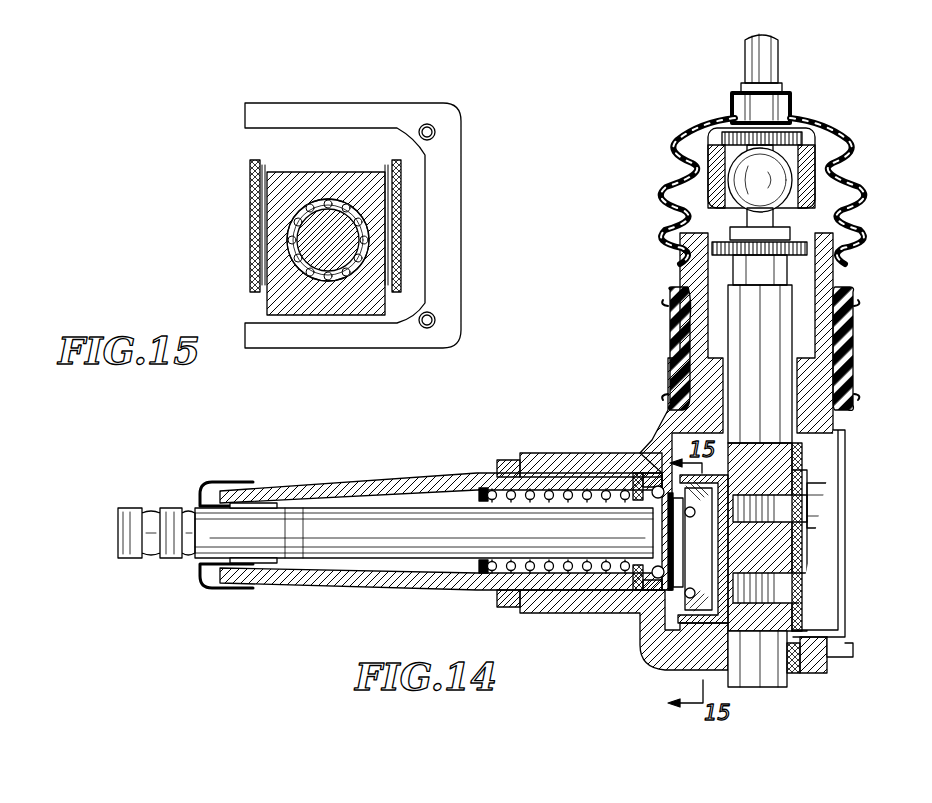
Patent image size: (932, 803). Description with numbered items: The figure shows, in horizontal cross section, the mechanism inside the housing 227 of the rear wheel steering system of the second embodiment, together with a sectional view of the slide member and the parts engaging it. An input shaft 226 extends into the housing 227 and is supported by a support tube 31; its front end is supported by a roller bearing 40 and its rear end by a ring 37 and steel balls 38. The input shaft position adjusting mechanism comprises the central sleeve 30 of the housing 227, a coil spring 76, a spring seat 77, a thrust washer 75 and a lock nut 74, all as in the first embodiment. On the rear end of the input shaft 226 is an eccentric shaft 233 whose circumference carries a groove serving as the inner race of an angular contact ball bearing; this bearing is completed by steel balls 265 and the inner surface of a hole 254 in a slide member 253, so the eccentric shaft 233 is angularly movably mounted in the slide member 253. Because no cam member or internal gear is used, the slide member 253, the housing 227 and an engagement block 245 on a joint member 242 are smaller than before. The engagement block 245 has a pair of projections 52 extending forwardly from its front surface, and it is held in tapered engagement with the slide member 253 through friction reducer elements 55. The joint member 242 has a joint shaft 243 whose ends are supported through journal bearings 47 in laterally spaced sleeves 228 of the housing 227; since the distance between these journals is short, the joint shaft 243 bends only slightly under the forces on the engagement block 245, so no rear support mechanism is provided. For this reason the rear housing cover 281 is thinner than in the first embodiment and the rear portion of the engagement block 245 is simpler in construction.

In FIG. 14, the central sleeve 30 is at (542, 613).
In FIG. 14, the support tube 31 is at (352, 575).
In FIG. 14, the ring 37 is at (645, 448).
In FIG. 14, the steel balls 38 is at (640, 592).
In FIG. 14, the roller bearing 40 is at (258, 564).
In FIG. 14, the journal bearings 47 is at (798, 367).
In FIG. 14, the projections 52 is at (745, 478).
In FIG. 15, the projections 52 is at (252, 192).
In FIG. 14, the friction reducer elements 55 is at (650, 450).
In FIG. 15, the friction reducer elements 55 is at (263, 240).
In FIG. 14, the lock nut 74 is at (507, 608).
In FIG. 14, the thrust washer 75 is at (640, 478).
In FIG. 14, the coil spring 76 is at (483, 578).
In FIG. 14, the spring seat 77 is at (483, 490).
In FIG. 14, the input shaft 226 is at (355, 517).
In FIG. 14, the housing 227 is at (545, 425).
In FIG. 15, the housing 227 is at (365, 110).
In FIG. 14, the sleeves 228 is at (822, 388).
In FIG. 14, the eccentric shaft 233 is at (735, 522).
In FIG. 15, the eccentric shaft 233 is at (328, 222).
In FIG. 14, the joint member 242 is at (718, 333).
In FIG. 14, the joint shaft 243 is at (780, 300).
In FIG. 14, the engagement block 245 is at (808, 528).
In FIG. 15, the engagement block 245 is at (408, 194).
In FIG. 14, the slide member 253 is at (703, 605).
In FIG. 15, the slide member 253 is at (365, 300).
In FIG. 14, the hole 254 is at (728, 480).
In FIG. 15, the hole 254 is at (305, 272).
In FIG. 14, the steel balls 265 is at (733, 575).
In FIG. 15, the steel balls 265 is at (325, 285).
In FIG. 14, the rear housing cover 281 is at (845, 595).